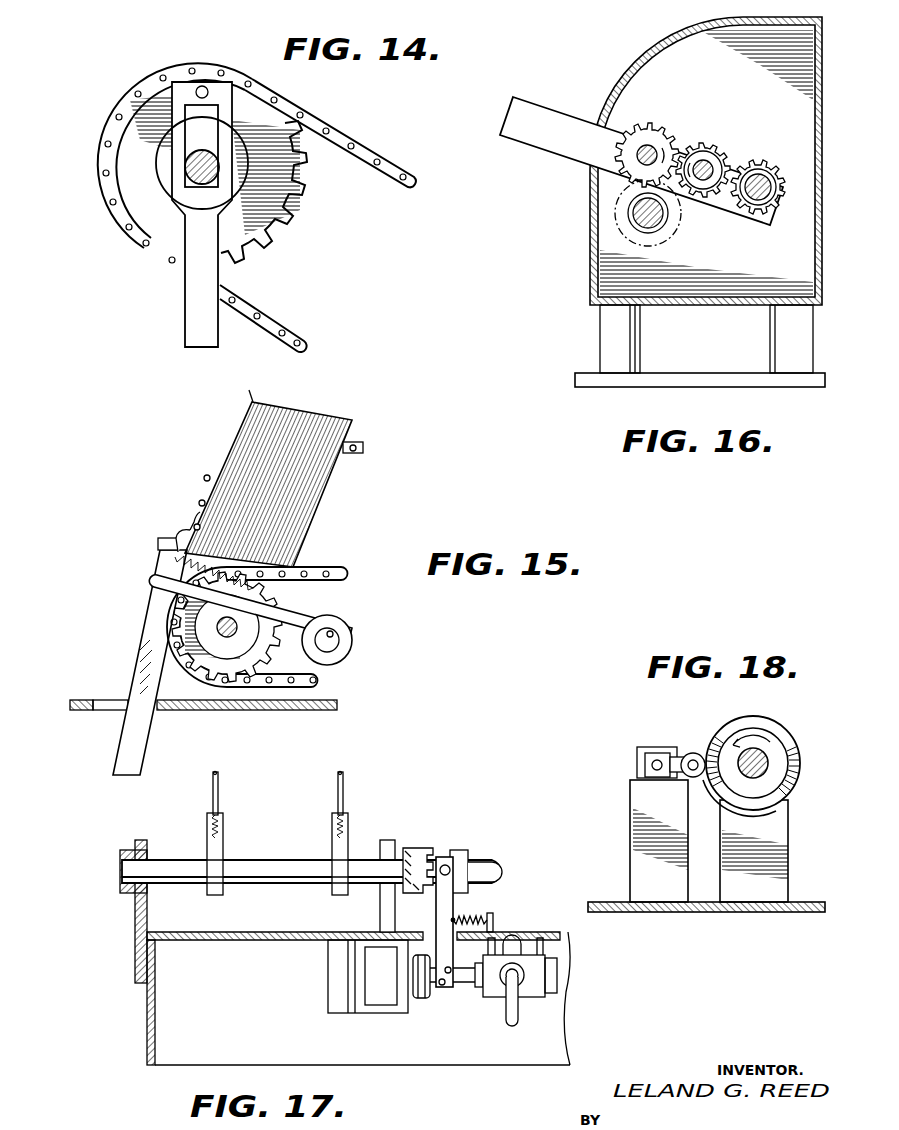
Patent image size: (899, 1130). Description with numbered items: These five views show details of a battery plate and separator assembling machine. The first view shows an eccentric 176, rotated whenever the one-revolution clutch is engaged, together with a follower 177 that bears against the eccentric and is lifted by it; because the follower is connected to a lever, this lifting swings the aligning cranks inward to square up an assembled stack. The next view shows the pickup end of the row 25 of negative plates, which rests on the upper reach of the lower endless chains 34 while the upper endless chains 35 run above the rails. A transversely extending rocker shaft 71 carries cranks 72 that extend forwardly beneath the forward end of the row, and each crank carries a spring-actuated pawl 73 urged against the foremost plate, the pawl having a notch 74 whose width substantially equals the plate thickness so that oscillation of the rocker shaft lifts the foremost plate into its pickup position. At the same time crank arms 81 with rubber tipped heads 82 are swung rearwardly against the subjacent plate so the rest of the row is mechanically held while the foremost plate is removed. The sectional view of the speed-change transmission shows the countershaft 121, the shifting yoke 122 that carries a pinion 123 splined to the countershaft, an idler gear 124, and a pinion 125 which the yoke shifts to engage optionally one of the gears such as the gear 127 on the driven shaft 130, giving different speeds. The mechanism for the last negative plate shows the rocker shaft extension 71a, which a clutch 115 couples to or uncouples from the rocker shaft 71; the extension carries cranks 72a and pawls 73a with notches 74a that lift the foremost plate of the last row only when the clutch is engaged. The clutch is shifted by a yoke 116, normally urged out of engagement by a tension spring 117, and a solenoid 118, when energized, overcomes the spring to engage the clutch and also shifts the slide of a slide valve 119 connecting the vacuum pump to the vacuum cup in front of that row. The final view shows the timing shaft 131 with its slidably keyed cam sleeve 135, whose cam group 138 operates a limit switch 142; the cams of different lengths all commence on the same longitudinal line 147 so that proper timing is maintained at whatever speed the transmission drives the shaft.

In FIG. 14, the eccentric 176 is at (160, 152).
In FIG. 14, the follower 177 is at (200, 322).
In FIG. 16, the countershaft 121 is at (764, 192).
In FIG. 16, the shifting yoke 122 is at (548, 125).
In FIG. 16, the pinion 123 is at (765, 162).
In FIG. 16, the idler gear 124 is at (707, 144).
In FIG. 16, the pinion 125 is at (652, 126).
In FIG. 16, the gear 127 is at (625, 198).
In FIG. 16, the driven shaft 130 is at (662, 216).
In FIG. 15, the row of negative battery plates 25 is at (293, 418).
In FIG. 15, the lower endless chains 34 is at (340, 567).
In FIG. 15, the upper endless chains 35 is at (366, 448).
In FIG. 15, the rocker shaft 71 is at (330, 638).
In FIG. 17, the rocker shaft 71 is at (487, 865).
In FIG. 15, the cranks 72 is at (305, 620).
In FIG. 15, the spring-actuated pawl 73 is at (183, 533).
In FIG. 15, the notches 74 is at (193, 522).
In FIG. 15, the crank arms 81 is at (130, 747).
In FIG. 15, the rubber tipped heads 82 is at (158, 544).
In FIG. 17, the extension 71a is at (291, 868).
In FIG. 17, the cranks 72a is at (207, 837).
In FIG. 17, the spring-actuated pawls 73a is at (218, 792).
In FIG. 17, the pin tip 74a is at (216, 772).
In FIG. 17, the clutch 115 is at (412, 850).
In FIG. 17, the clutch shifter or yoke 116 is at (440, 914).
In FIG. 17, the tension spring 117 is at (477, 916).
In FIG. 17, the solenoid 118 is at (390, 995).
In FIG. 17, the slide valve 119 is at (538, 973).
In FIG. 18, the timing shaft 131 is at (765, 757).
In FIG. 18, the cam sleeve 135 is at (782, 760).
In FIG. 18, the cam group 138 is at (717, 742).
In FIG. 18, the limit switch 142 is at (640, 762).
In FIG. 18, the longitudinal line 147 is at (773, 808).